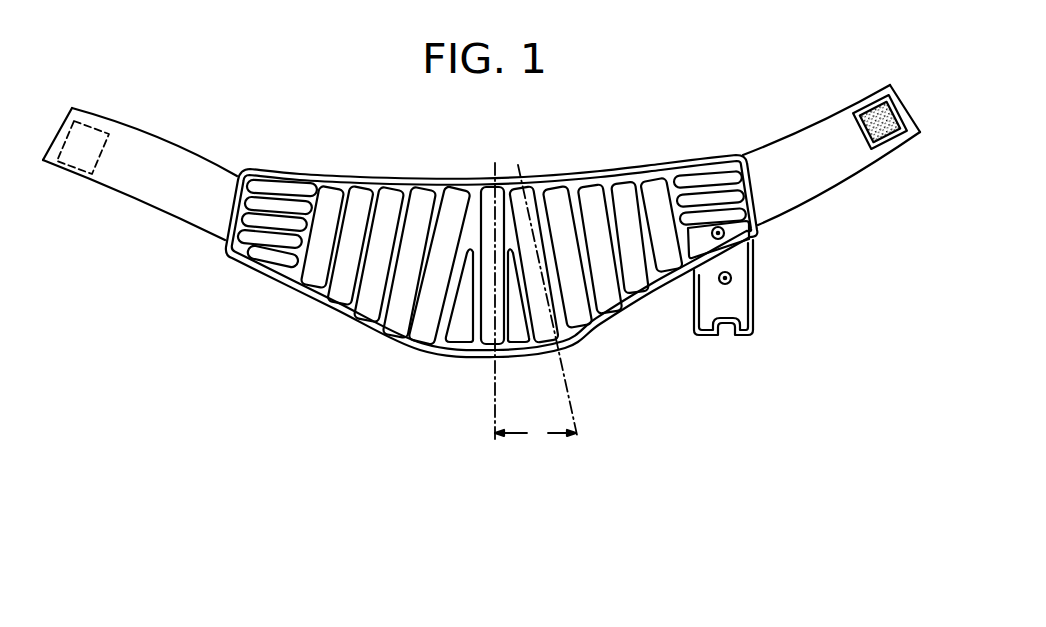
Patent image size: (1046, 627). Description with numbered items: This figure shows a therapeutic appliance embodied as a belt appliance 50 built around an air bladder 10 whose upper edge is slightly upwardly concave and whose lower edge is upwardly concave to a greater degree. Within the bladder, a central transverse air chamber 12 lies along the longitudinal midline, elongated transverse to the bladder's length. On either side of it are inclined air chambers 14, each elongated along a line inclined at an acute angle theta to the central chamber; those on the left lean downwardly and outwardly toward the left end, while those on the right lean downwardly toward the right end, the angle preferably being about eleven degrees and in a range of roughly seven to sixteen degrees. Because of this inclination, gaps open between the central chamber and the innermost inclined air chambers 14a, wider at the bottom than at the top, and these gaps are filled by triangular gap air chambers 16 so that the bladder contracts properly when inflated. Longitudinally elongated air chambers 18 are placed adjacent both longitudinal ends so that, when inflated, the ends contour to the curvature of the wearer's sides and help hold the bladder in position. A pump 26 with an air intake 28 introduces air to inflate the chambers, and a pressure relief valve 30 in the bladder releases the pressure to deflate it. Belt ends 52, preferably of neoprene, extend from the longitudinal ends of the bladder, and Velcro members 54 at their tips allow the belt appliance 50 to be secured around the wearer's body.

The air bladder 10 is at (519, 276).
The central transverse air chamber 12 is at (498, 187).
The inclined air chambers 14 is at (492, 259).
The innermost inclined air chambers 14a is at (433, 338).
The gap air chambers 16 is at (462, 340).
The longitudinally elongated air chambers 18 is at (272, 186).
The pump 26 is at (753, 292).
The air intake 28 is at (732, 278).
The pressure relief valve 30 is at (725, 233).
The belt appliance 50 is at (481, 233).
The belt ends 52 is at (831, 170).
The Velcro members 54 is at (891, 140).